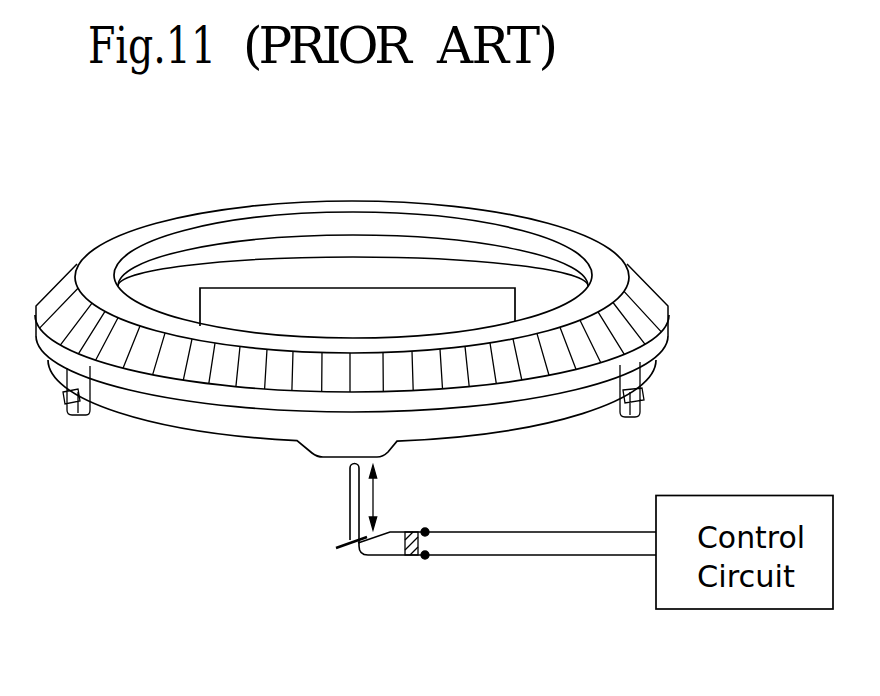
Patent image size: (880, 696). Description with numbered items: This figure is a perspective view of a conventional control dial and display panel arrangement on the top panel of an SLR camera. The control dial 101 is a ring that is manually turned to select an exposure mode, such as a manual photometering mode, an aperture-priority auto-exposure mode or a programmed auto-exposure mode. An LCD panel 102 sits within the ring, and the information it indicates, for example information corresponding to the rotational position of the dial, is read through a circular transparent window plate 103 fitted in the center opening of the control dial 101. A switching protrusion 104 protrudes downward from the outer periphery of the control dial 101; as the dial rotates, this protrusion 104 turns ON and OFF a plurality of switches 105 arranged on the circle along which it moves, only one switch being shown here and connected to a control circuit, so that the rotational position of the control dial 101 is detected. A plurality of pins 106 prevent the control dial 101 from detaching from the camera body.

The control dial 101 is at (585, 247).
The LCD panel 102 is at (353, 297).
The circular transparent window plate 103 is at (168, 290).
The switching protrusion 104 is at (338, 436).
The switches 105 is at (363, 584).
The pins 106 is at (614, 430).